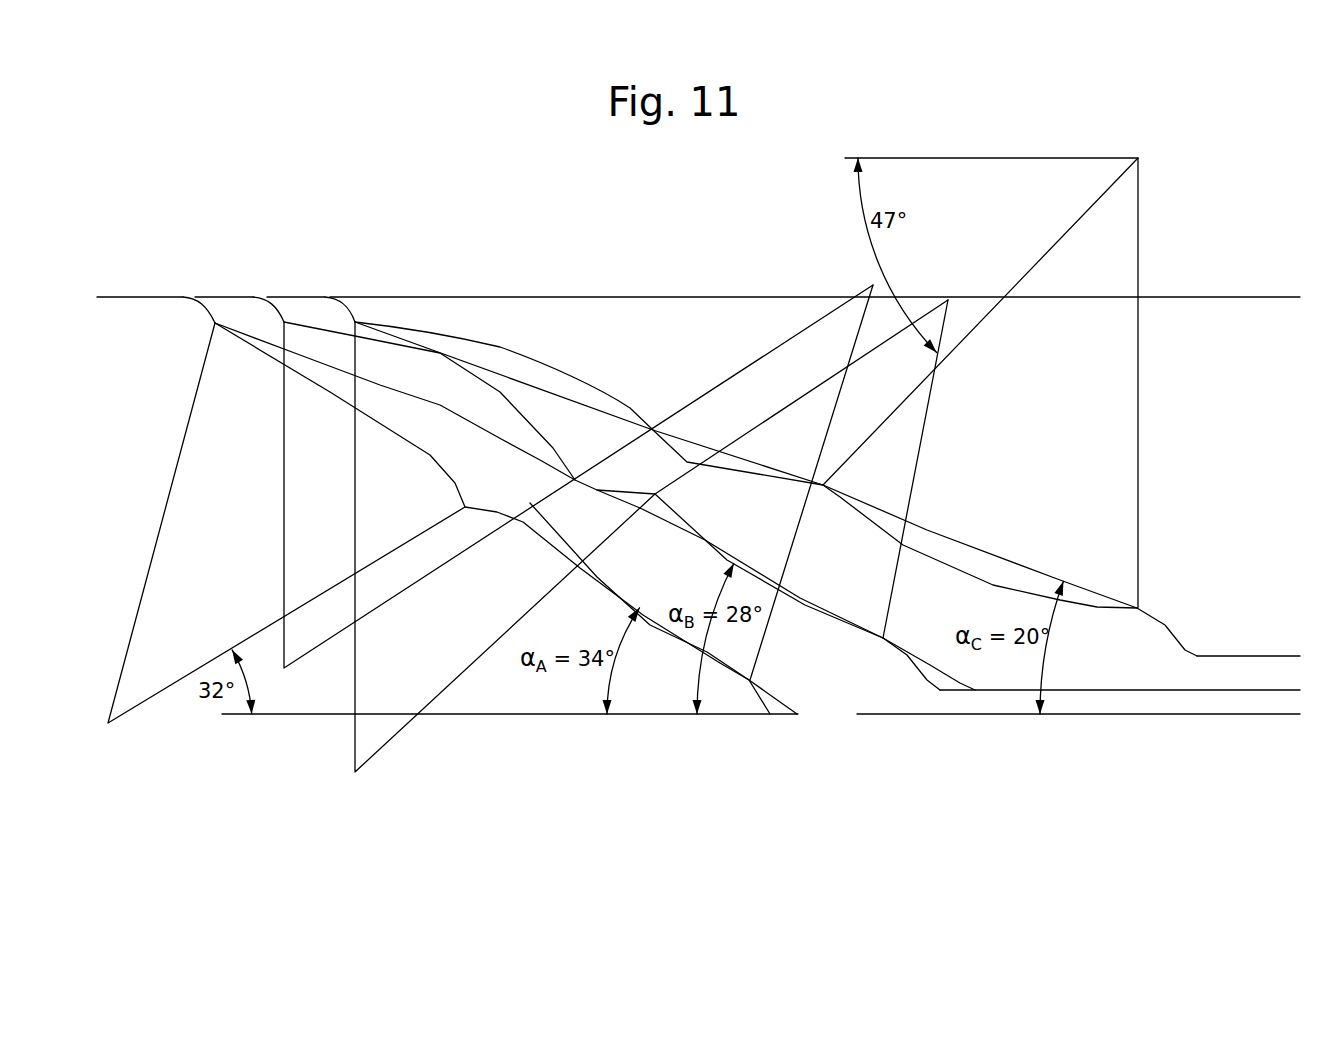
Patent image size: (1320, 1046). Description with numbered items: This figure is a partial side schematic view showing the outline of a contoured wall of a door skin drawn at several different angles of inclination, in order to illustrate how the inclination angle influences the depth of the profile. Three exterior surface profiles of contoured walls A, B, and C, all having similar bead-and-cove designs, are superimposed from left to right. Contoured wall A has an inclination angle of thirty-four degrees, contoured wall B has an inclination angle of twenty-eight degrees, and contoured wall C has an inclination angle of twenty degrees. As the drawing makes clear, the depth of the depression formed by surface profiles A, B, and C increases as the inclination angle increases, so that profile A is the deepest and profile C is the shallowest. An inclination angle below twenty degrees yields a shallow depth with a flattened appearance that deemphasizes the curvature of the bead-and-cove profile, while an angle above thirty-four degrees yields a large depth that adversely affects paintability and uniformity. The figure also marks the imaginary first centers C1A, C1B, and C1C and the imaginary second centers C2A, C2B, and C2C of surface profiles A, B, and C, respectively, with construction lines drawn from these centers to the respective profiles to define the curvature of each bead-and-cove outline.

The contoured wall A is at (440, 467).
The contoured wall B is at (553, 448).
The contoured wall C is at (610, 395).
The imaginary first center C1A is at (280, 543).
The imaginary first center C1B is at (572, 495).
The imaginary first center C1C is at (644, 555).
The imaginary second center C2A is at (873, 285).
The imaginary second center C2B is at (948, 300).
The imaginary second center C2C is at (999, 310).